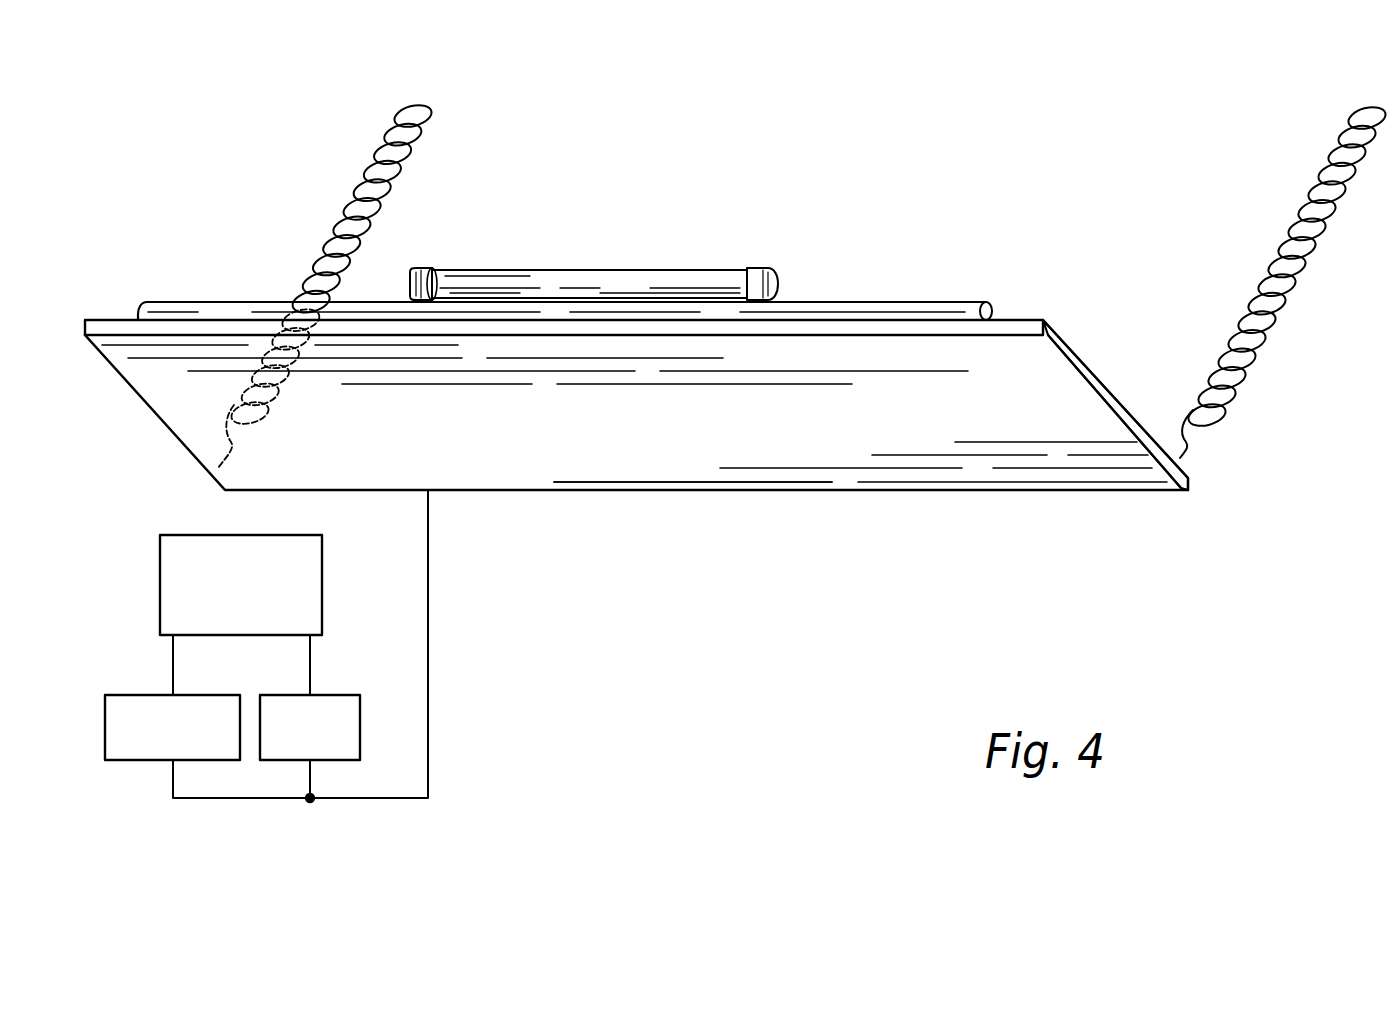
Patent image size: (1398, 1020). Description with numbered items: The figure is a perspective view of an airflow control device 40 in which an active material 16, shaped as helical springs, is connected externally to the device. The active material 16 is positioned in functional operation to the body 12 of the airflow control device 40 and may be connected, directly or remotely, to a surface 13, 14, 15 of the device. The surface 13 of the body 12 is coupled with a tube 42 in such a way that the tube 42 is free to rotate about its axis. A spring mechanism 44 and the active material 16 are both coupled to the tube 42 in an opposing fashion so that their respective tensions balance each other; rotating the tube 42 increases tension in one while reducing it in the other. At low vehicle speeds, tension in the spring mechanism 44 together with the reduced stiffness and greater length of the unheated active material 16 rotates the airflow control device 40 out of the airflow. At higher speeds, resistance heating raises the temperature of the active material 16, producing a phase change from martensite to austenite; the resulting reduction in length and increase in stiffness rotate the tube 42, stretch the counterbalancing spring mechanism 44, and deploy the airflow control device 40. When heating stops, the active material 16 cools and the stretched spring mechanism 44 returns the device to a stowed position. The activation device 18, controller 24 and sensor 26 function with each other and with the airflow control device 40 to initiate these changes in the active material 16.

The airflow control device 40 is at (1086, 141).
The body 12 is at (160, 419).
The surface 13 is at (1077, 347).
The surface 14 is at (1143, 420).
The surface 15 is at (610, 470).
The active material 16 is at (357, 175).
The activation device 18 is at (143, 695).
The controller 24 is at (160, 568).
The sensor 26 is at (335, 695).
The tube 42 is at (880, 301).
The spring mechanism 44 is at (600, 277).